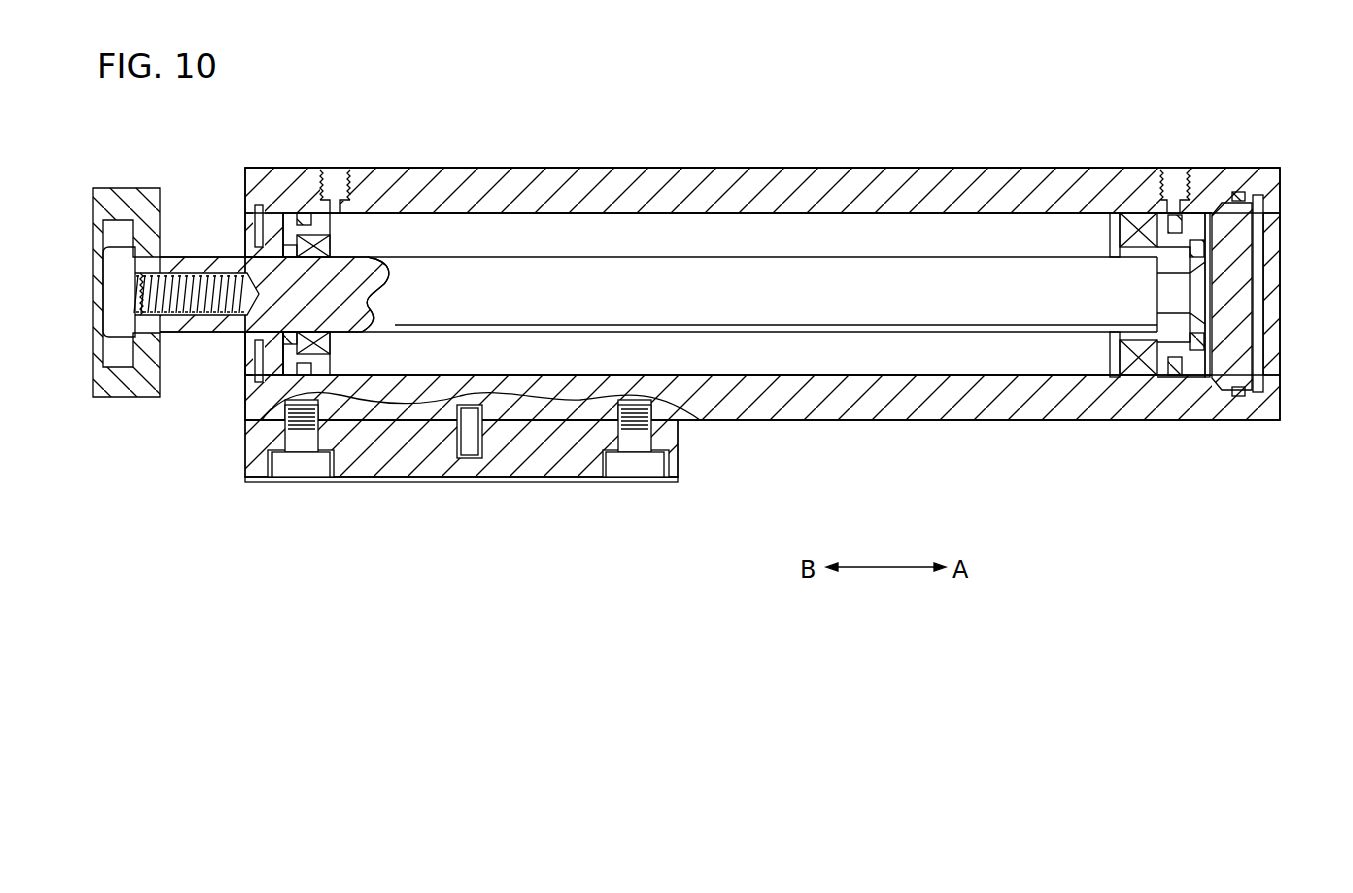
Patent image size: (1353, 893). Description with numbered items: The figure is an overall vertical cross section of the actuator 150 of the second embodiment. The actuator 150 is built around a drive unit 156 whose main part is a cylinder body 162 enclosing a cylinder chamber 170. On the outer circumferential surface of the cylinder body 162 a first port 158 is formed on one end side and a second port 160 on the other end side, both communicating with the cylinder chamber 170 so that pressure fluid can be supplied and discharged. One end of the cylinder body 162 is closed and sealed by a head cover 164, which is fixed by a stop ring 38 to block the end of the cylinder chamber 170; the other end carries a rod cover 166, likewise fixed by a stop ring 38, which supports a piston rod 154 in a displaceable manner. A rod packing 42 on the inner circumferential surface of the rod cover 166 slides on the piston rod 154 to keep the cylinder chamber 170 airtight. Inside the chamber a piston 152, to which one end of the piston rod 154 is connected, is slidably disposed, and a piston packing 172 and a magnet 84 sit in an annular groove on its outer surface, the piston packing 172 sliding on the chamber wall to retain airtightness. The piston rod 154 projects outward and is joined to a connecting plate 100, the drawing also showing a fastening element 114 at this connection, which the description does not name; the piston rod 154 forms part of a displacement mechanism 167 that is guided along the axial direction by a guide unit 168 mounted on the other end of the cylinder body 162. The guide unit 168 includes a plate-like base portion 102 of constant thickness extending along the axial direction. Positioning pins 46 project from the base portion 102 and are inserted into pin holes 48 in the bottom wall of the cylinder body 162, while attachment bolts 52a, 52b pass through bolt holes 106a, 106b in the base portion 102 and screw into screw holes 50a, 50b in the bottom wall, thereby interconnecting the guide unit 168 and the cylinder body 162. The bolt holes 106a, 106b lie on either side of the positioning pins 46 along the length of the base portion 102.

The actuator 150 is at (362, 96).
The drive unit 156 is at (866, 150).
The cylinder body 162 is at (930, 167).
The cylinder chamber 170 is at (778, 232).
The displacement mechanism 167 is at (898, 345).
The second port 160 is at (336, 192).
The first port 158 is at (1175, 188).
The stop ring 38 is at (256, 210).
The rod packing 42 is at (292, 225).
The rod cover 166 is at (272, 360).
The piston rod 154 is at (950, 266).
The bolt 114 is at (123, 257).
The connecting plate 100 is at (122, 397).
The guide unit 168 is at (397, 495).
The base portion 102 is at (548, 470).
The attachment bolt 52a is at (272, 462).
The attachment bolt 52b is at (612, 462).
The screw hole 50a is at (282, 416).
The screw hole 50b is at (656, 422).
The bolt hole 106a is at (302, 455).
The bolt hole 106b is at (638, 455).
The pin hole 48 is at (470, 462).
The positioning pin 46 is at (478, 442).
The piston 152 is at (1108, 365).
The magnet 84 is at (1140, 228).
The piston packing 172 is at (1180, 378).
The head cover 164 is at (1245, 300).